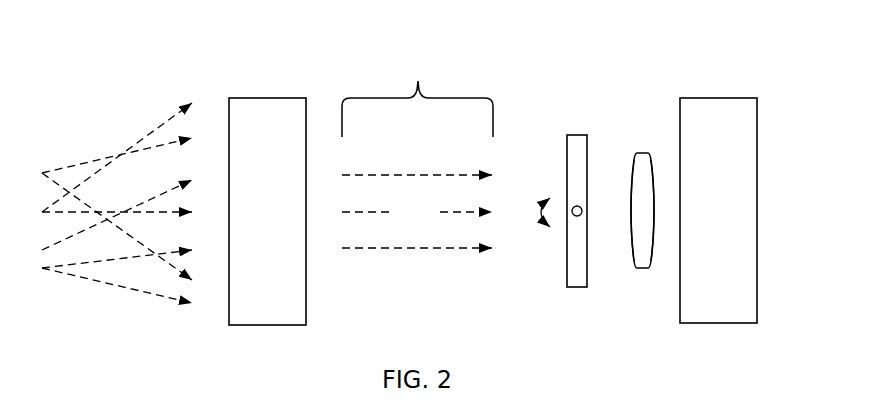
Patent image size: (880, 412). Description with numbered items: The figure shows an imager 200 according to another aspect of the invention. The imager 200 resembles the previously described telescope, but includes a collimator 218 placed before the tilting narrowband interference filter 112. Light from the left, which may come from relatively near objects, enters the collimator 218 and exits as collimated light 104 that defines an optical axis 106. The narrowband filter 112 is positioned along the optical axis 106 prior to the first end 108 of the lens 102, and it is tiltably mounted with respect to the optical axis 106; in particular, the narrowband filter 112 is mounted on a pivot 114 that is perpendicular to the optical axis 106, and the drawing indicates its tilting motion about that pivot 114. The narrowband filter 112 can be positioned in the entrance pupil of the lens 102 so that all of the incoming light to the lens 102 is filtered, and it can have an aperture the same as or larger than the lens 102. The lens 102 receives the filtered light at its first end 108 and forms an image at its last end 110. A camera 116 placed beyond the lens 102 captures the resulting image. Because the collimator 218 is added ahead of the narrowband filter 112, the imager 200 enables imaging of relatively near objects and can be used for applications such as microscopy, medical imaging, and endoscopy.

The imager 200 is at (808, 55).
The collimator 218 is at (246, 225).
The collimated light 104 is at (417, 90).
The optical axis 106 is at (395, 225).
The narrowband filter 112 is at (562, 287).
The pivot 114 is at (573, 205).
The lens 102 is at (646, 153).
The first end 108 is at (632, 207).
The last end 110 is at (653, 213).
The camera 116 is at (696, 225).